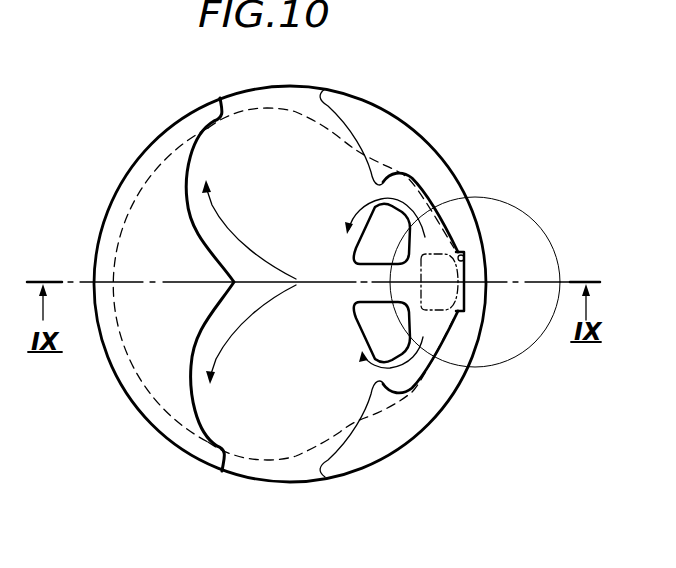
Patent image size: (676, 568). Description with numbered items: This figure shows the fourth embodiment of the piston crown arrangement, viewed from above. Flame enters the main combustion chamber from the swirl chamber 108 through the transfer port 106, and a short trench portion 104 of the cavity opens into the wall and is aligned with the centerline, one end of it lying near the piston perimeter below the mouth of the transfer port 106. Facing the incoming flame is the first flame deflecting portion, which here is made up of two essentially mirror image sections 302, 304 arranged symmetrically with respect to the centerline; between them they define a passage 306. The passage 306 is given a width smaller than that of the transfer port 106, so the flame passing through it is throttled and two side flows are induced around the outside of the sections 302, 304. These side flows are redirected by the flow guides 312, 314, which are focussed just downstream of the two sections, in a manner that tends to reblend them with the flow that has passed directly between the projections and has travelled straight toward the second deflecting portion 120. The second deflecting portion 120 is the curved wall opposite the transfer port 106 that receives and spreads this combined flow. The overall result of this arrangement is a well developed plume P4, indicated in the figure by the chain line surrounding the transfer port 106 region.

The second deflecting portion 120 is at (231, 286).
The plume P4 is at (142, 385).
The flow guide 312 is at (370, 170).
The flow guide 314 is at (380, 387).
The mirror image section 302 is at (376, 233).
The mirror image section 304 is at (370, 323).
The passage 306 is at (374, 275).
The transfer port 106 is at (467, 266).
The trench portion 104 is at (465, 257).
The swirl chamber 108 is at (512, 203).